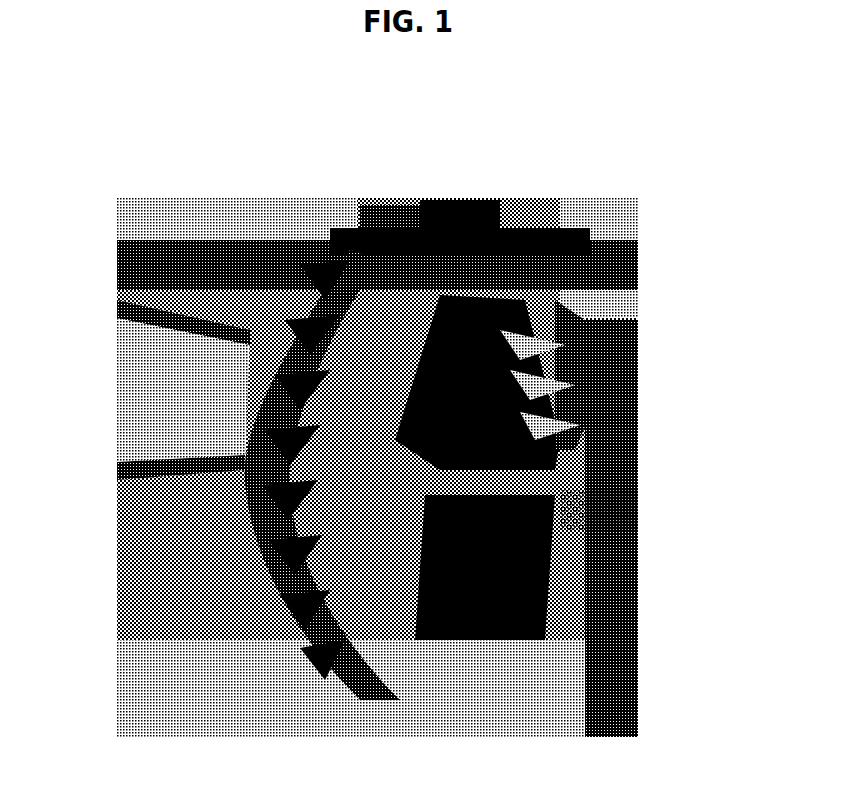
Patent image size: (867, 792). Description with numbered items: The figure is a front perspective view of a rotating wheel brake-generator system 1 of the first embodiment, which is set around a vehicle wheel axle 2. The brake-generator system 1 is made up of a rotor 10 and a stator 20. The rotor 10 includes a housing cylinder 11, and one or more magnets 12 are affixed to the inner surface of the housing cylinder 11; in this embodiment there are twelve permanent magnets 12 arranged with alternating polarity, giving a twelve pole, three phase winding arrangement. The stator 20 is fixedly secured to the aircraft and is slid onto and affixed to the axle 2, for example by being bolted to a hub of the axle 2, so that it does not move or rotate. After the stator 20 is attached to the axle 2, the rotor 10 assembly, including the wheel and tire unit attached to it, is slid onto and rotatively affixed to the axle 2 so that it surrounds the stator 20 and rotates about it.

The rotating wheel brake-generator system 1 is at (592, 218).
The vehicle wheel axle 2 is at (617, 456).
The rotor 10 is at (283, 199).
The housing cylinder 11 is at (215, 275).
The magnets 12 is at (368, 222).
The stator 20 is at (585, 355).